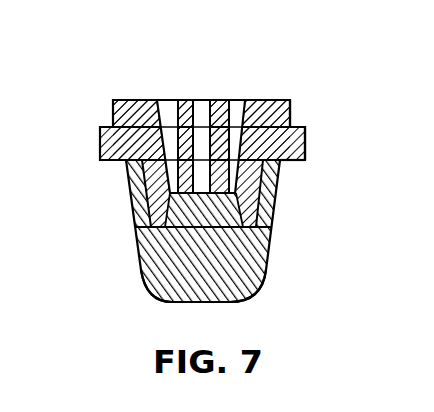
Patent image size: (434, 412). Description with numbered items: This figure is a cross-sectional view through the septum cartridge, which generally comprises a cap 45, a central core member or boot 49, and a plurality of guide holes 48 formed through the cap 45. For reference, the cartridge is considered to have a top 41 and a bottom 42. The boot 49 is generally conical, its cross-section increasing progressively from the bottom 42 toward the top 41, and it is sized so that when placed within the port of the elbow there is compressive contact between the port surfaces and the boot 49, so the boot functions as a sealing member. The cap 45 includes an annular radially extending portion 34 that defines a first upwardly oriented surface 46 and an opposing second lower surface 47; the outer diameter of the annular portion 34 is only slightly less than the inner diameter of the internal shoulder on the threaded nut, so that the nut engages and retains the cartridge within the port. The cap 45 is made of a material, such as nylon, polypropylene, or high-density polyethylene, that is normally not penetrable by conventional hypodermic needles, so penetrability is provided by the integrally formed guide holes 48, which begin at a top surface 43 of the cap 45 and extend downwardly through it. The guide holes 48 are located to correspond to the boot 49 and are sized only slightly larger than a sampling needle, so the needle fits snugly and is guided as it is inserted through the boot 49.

The annular radially extending portion 34 is at (100, 133).
The top 41 is at (268, 99).
The bottom 42 is at (256, 288).
The top surface 43 is at (218, 99).
The cap 45 is at (123, 100).
The first upwardly oriented surface 46 is at (304, 127).
The second lower surface 47 is at (291, 162).
The guide holes 48 is at (156, 99).
The boot 49 is at (143, 259).